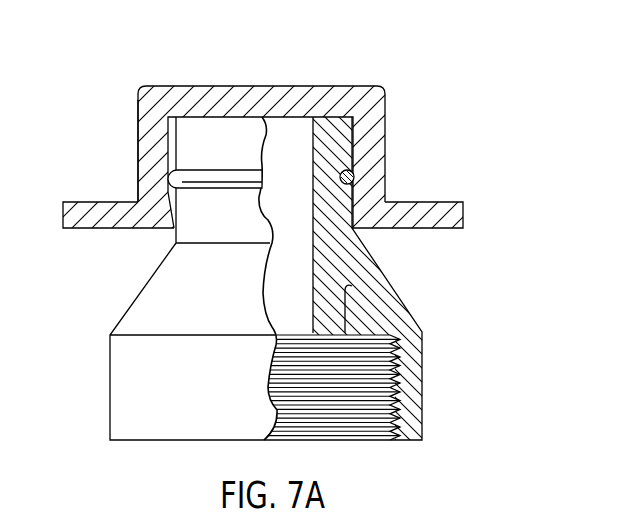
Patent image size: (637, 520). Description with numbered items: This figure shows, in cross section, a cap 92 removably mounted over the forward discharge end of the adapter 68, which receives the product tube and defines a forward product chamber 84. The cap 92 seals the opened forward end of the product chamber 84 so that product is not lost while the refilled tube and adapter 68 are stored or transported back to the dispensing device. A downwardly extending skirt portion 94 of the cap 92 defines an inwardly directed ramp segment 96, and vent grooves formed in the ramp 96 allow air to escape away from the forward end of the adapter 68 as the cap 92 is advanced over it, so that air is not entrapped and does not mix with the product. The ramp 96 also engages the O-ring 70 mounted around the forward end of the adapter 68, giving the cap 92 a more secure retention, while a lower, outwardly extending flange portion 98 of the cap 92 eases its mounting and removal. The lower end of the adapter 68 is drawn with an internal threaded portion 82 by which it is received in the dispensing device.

The adapter 68 is at (424, 365).
The O-ring 70 is at (352, 177).
The threaded bore 82 is at (332, 310).
The product chamber 84 is at (284, 190).
The cap 92 is at (285, 86).
The skirt portion 94 is at (138, 158).
The ramp segment 96 is at (168, 193).
The flange 98 is at (434, 230).